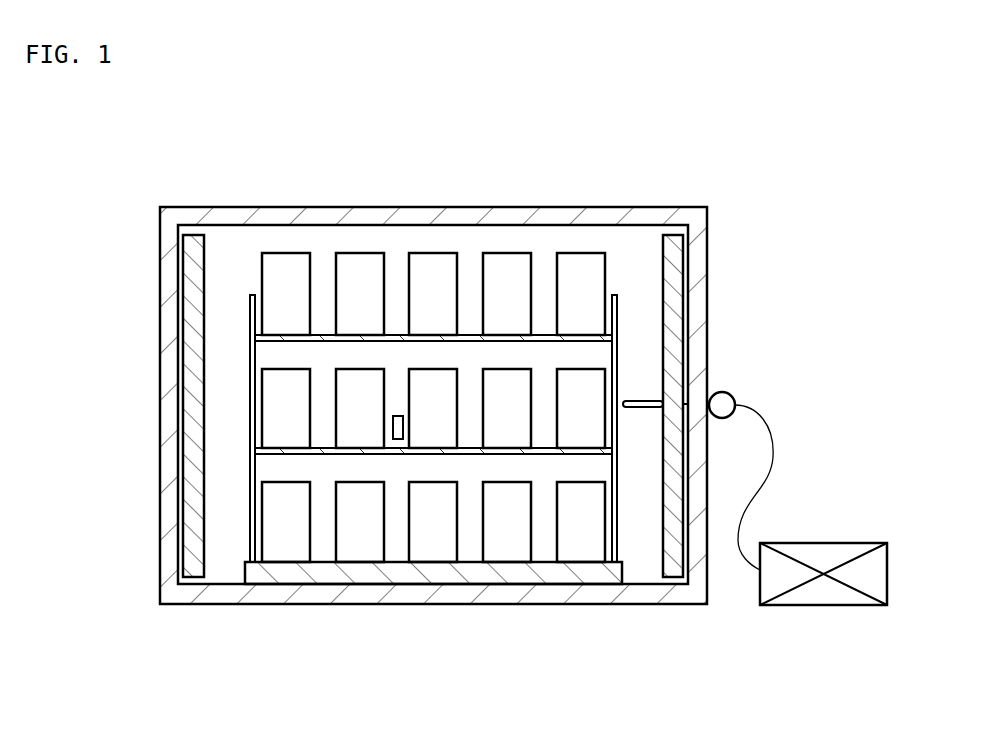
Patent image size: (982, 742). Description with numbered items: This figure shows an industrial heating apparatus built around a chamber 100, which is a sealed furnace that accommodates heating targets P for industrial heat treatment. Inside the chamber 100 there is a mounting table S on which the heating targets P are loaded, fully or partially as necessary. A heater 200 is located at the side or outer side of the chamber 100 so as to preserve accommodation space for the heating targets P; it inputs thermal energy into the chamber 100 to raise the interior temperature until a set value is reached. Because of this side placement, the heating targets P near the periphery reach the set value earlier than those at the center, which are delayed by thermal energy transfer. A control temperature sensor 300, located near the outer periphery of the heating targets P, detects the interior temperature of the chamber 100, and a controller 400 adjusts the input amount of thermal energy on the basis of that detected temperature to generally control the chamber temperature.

The chamber 100 is at (432, 207).
The heater 200 is at (186, 250).
The control temperature sensor 300 is at (733, 395).
The controller 400 is at (823, 543).
The heating target P is at (605, 283).
The mounting table S is at (250, 398).